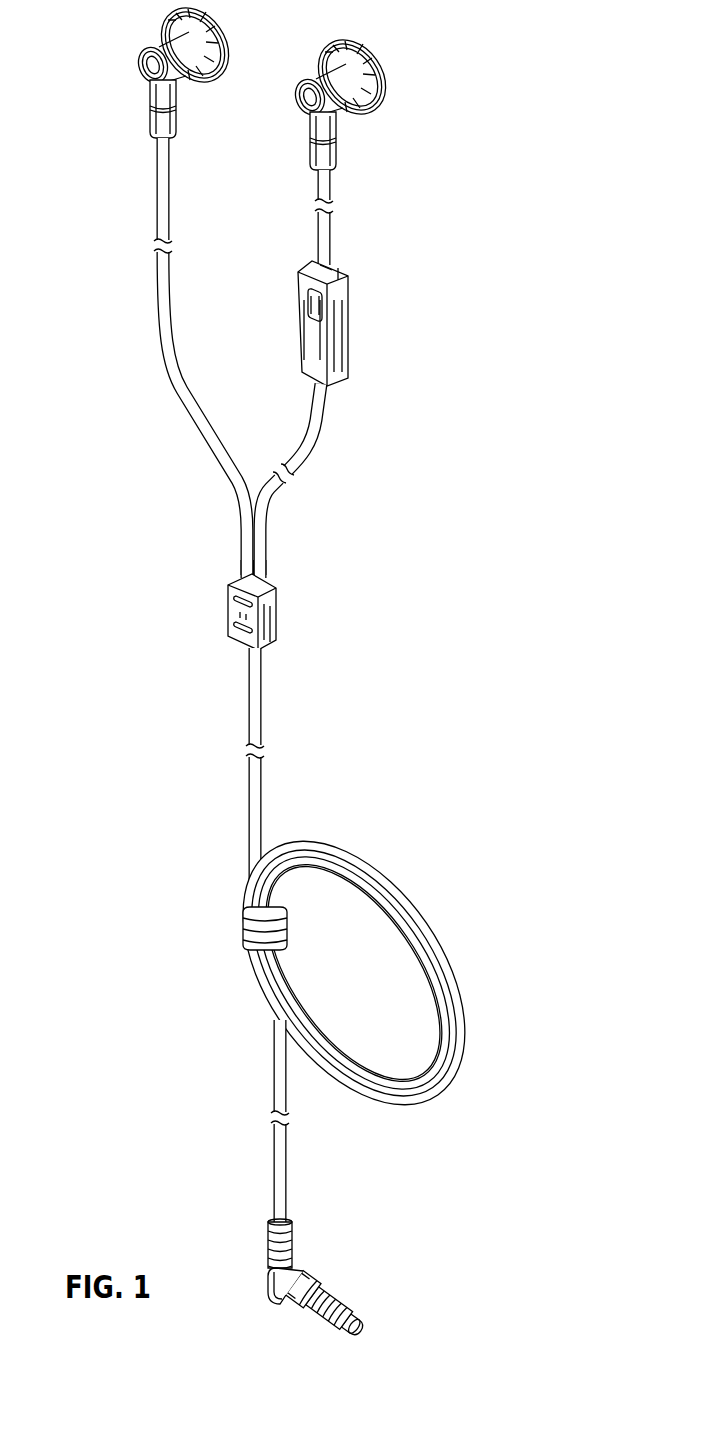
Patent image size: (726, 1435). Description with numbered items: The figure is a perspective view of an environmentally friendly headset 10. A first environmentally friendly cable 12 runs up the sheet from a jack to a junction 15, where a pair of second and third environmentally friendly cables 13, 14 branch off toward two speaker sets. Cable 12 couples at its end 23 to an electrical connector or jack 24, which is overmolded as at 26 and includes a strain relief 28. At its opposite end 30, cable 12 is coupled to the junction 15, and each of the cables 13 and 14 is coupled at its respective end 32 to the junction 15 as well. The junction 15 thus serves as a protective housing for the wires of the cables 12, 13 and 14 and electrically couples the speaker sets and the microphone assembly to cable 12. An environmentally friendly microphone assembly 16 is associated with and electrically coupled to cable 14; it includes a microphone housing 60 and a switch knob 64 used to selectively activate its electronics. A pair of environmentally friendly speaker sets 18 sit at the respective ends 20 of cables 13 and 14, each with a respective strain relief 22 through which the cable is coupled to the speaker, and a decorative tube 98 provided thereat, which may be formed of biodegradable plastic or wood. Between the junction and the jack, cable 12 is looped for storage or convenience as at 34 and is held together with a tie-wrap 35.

The environmentally friendly headset 10 is at (480, 42).
The first environmentally friendly cable 12 is at (248, 700).
The second environmentally friendly cable 13 is at (182, 411).
The third environmentally friendly cable 14 is at (311, 461).
The junction 15 is at (268, 606).
The environmentally friendly microphone assembly 16 is at (354, 347).
The environmentally friendly speaker set 18 is at (142, 57).
The end 20 is at (158, 149).
The strain relief 22 is at (150, 88).
The end 23 is at (278, 1212).
The electrical connector or jack 24 is at (262, 1298).
The overmold 26 is at (300, 1276).
The strain relief 28 is at (265, 1252).
The end 30 is at (260, 657).
The end 32 is at (240, 574).
The loop 34 is at (427, 890).
The tie-wrap 35 is at (245, 918).
The microphone housing 60 is at (350, 296).
The switch knob 64 is at (312, 306).
The decorative tube 98 is at (160, 129).